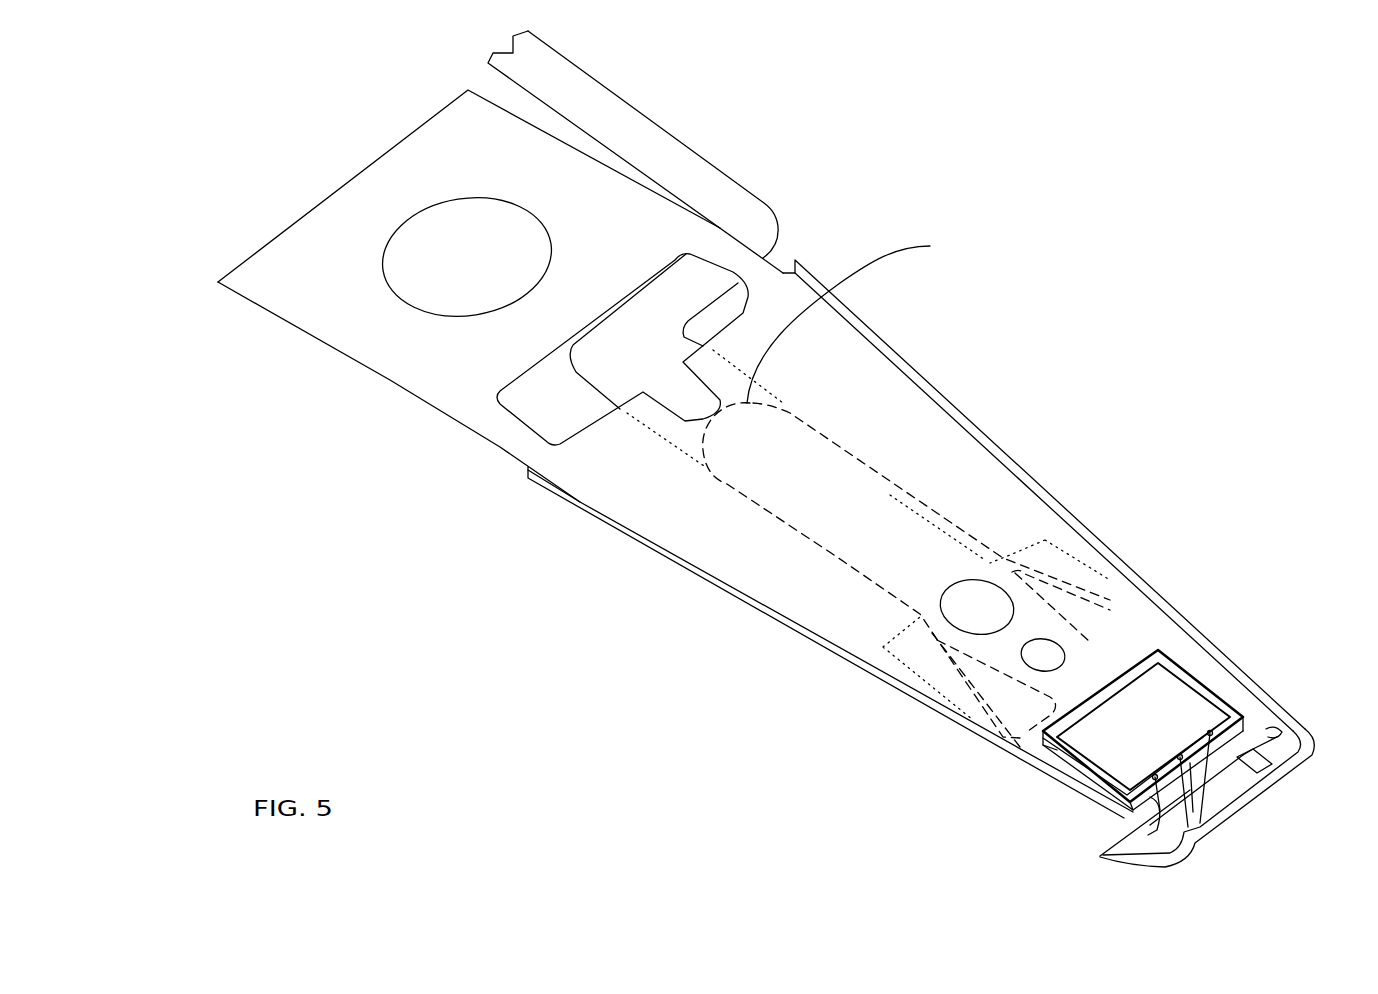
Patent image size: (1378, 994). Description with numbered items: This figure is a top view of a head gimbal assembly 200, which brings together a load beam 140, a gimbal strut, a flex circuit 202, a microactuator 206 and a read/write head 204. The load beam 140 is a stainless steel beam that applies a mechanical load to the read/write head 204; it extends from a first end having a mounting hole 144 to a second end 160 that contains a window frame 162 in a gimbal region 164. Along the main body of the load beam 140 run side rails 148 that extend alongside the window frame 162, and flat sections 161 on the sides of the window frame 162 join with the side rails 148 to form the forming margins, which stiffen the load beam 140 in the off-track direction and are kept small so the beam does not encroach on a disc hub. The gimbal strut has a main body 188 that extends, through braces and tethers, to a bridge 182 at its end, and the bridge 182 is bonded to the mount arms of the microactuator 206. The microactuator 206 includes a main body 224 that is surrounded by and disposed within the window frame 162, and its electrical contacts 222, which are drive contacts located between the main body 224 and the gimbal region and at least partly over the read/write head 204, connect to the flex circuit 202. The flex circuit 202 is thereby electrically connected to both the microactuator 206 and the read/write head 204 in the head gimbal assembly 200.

The beam 140 is at (360, 332).
The mounting hole 144 is at (383, 278).
The side rails 148 is at (910, 365).
The second end 160 is at (1176, 452).
The flat sections 161 is at (1222, 676).
The window frame 162 is at (1100, 687).
The gimbal region 164 is at (1220, 797).
The bridge 182 is at (1262, 740).
The main body 188 is at (864, 320).
The head gimbal assembly 200 is at (1132, 155).
The flex circuit 202 is at (630, 135).
The read/write head 204 is at (1210, 800).
The microactuator 206 is at (1045, 748).
The electrical contacts 222 is at (1100, 857).
The main body 224 is at (1159, 742).